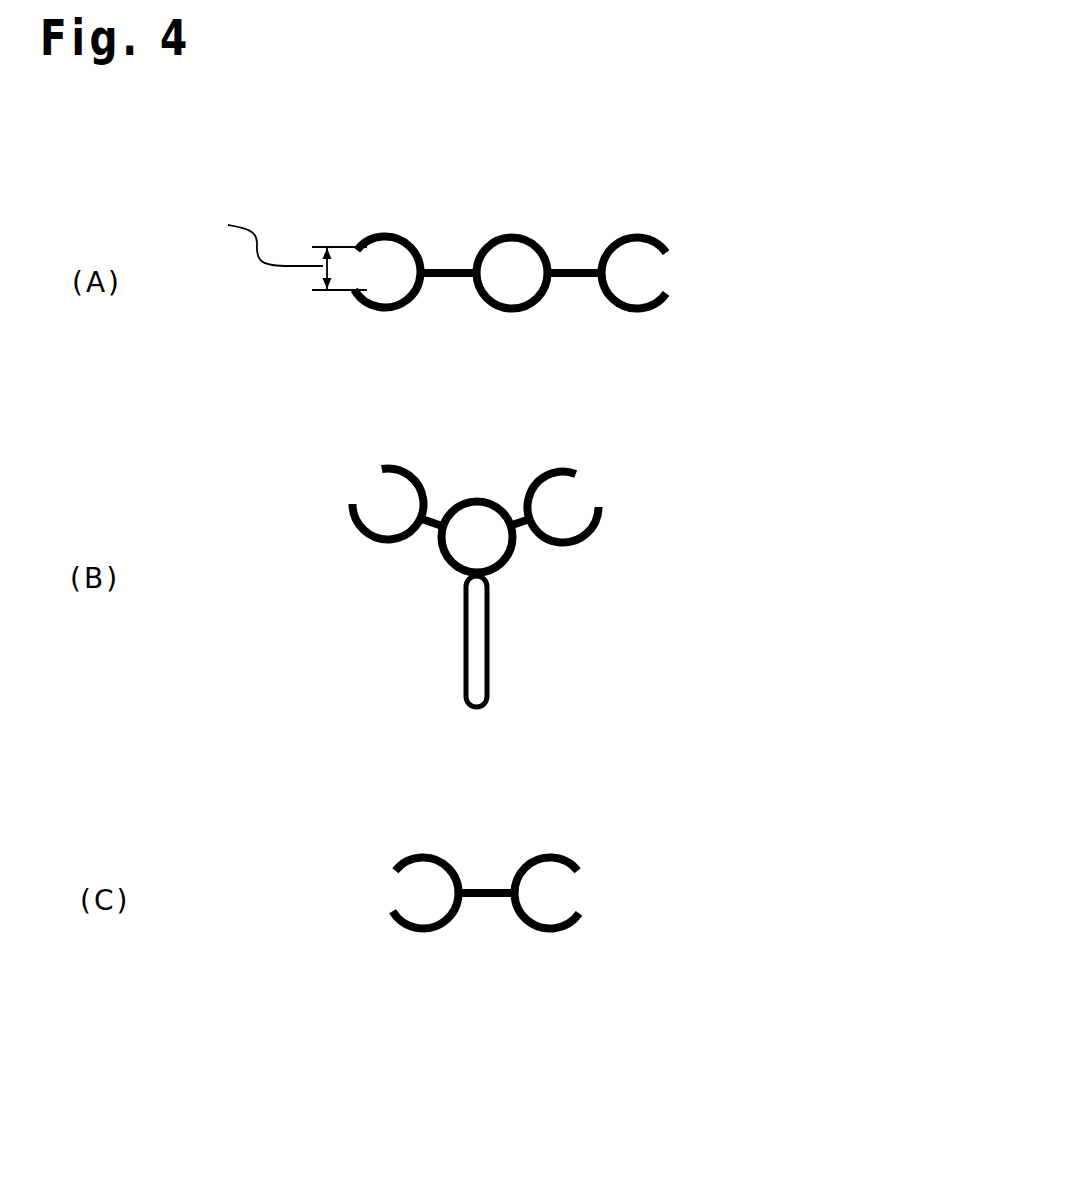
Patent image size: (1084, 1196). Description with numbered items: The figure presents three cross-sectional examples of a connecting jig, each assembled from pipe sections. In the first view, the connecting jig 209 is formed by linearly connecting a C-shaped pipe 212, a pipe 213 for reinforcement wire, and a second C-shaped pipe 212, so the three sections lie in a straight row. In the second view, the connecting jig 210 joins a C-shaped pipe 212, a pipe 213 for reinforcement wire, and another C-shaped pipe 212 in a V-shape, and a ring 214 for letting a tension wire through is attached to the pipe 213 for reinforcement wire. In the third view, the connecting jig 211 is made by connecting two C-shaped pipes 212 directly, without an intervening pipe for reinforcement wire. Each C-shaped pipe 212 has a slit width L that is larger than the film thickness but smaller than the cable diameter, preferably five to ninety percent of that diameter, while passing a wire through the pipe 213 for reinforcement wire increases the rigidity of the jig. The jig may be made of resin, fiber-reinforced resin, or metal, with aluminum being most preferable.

The connecting jig 209 is at (580, 206).
The connecting jig 210 is at (546, 534).
The connecting jig 211 is at (599, 920).
The C-shaped pipe 212 is at (378, 237).
The pipe for reinforcement wire 213 is at (500, 236).
The ring 214 is at (473, 620).